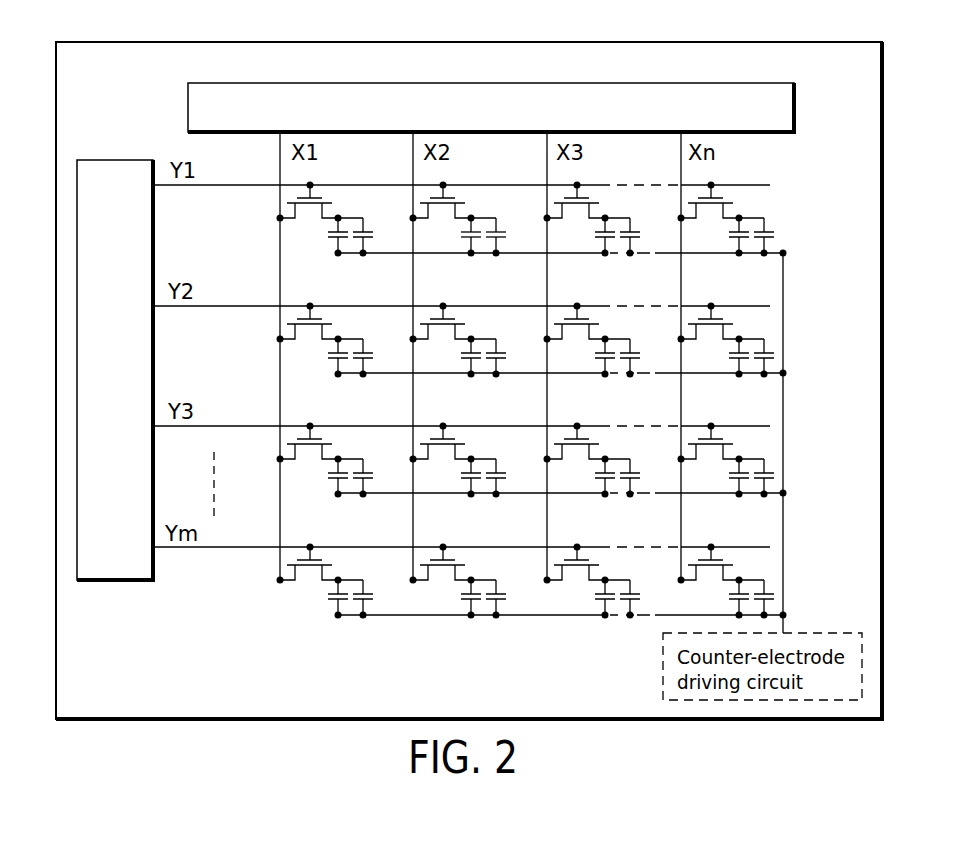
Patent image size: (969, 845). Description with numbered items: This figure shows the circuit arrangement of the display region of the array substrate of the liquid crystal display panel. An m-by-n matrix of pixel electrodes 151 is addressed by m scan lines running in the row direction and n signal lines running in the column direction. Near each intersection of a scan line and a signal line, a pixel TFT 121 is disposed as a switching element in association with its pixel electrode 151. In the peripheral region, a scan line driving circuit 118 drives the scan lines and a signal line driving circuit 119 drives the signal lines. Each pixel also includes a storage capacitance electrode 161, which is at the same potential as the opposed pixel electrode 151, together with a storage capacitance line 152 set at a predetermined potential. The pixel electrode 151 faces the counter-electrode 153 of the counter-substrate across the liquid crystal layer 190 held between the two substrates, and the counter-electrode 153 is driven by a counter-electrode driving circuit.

The scan line driving circuit 118 is at (120, 160).
The signal line driving circuit 119 is at (798, 103).
The pixel TFT 121 is at (465, 198).
The pixel electrode 151 is at (460, 232).
The storage capacitance line 152 is at (500, 241).
The counter-electrode 153 is at (465, 241).
The storage capacitance electrode 161 is at (503, 234).
The liquid crystal layer 190 is at (460, 236).